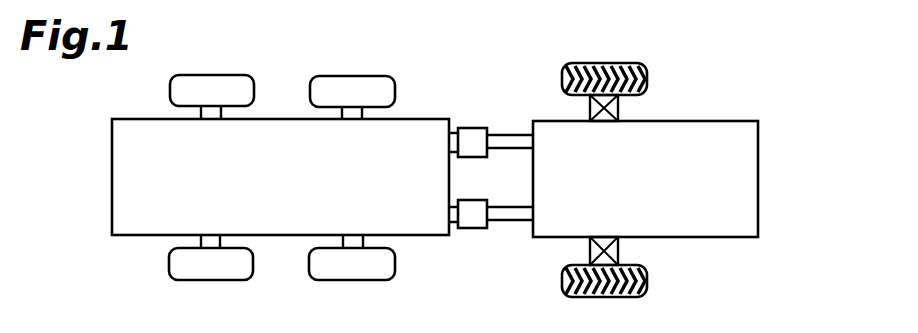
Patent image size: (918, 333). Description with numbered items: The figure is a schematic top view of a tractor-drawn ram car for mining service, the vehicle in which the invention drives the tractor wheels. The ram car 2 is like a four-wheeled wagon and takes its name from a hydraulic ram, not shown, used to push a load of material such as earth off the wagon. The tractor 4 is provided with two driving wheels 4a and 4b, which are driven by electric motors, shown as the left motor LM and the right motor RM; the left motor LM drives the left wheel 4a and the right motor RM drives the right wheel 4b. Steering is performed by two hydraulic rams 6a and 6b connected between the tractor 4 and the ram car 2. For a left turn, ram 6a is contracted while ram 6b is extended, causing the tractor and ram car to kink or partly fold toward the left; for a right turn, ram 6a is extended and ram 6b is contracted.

The ram car 2 is at (112, 168).
The tractor 4 is at (757, 161).
The left driving wheel 4a is at (645, 79).
The right driving wheel 4b is at (647, 284).
The hydraulic steering ram 6a is at (471, 135).
The hydraulic steering ram 6b is at (471, 222).
The left motor LM is at (590, 107).
The right motor RM is at (590, 252).